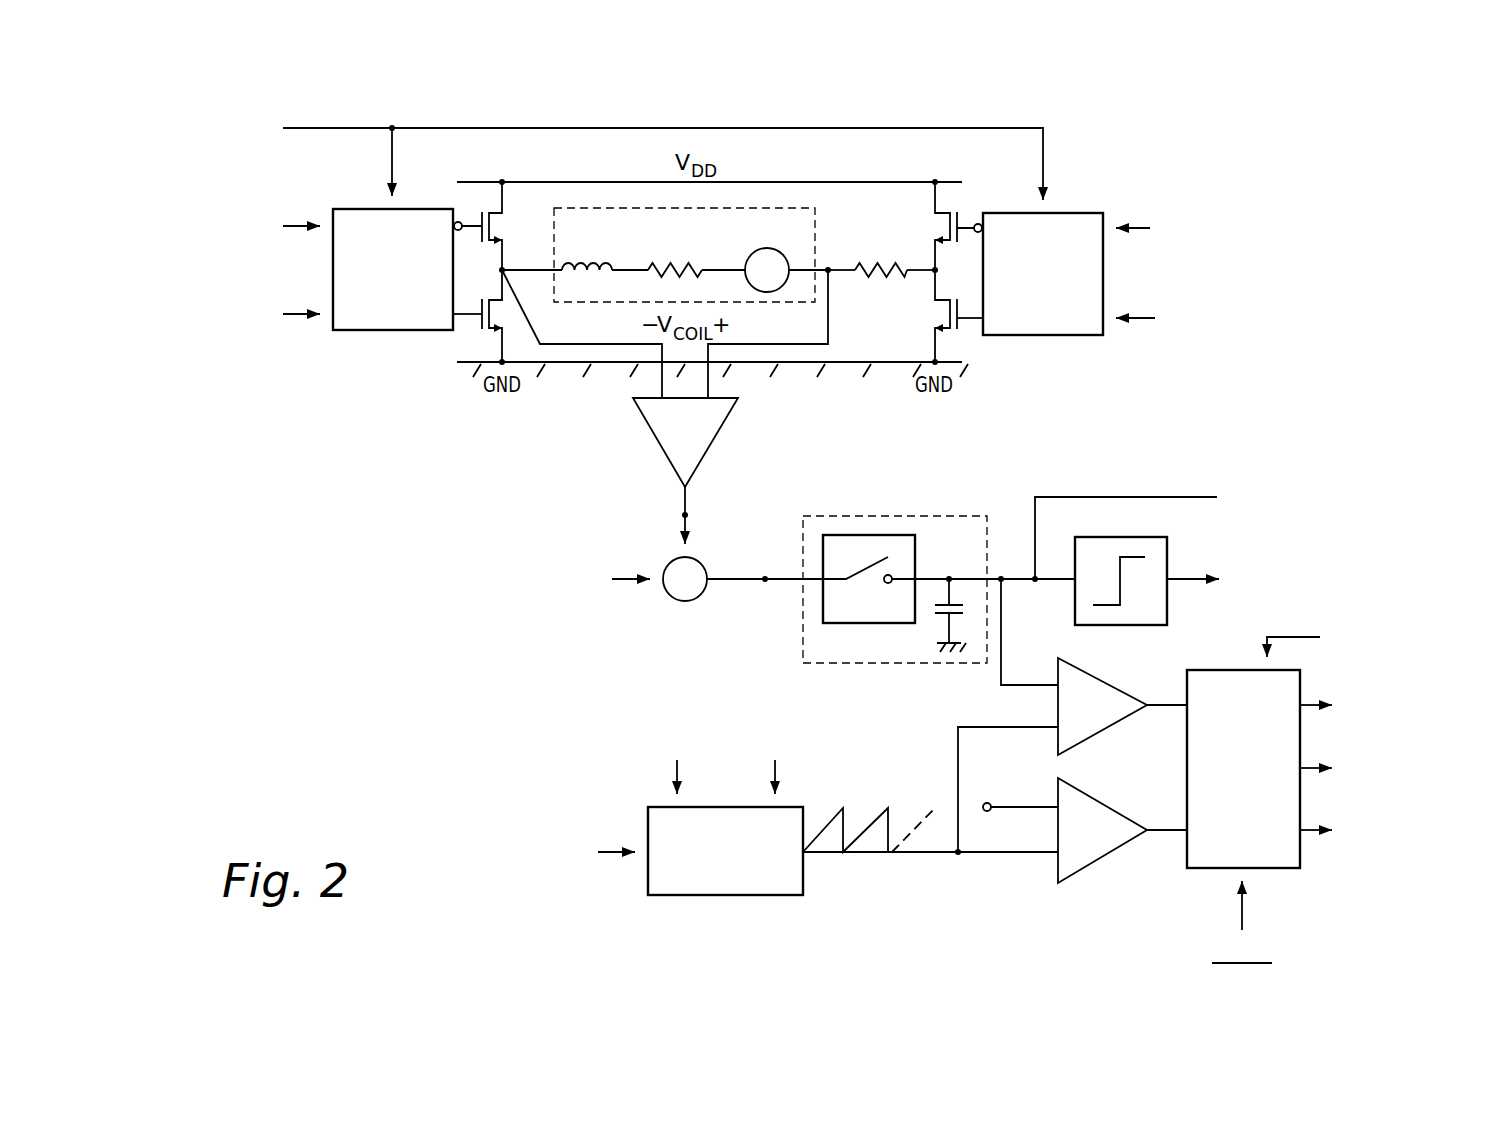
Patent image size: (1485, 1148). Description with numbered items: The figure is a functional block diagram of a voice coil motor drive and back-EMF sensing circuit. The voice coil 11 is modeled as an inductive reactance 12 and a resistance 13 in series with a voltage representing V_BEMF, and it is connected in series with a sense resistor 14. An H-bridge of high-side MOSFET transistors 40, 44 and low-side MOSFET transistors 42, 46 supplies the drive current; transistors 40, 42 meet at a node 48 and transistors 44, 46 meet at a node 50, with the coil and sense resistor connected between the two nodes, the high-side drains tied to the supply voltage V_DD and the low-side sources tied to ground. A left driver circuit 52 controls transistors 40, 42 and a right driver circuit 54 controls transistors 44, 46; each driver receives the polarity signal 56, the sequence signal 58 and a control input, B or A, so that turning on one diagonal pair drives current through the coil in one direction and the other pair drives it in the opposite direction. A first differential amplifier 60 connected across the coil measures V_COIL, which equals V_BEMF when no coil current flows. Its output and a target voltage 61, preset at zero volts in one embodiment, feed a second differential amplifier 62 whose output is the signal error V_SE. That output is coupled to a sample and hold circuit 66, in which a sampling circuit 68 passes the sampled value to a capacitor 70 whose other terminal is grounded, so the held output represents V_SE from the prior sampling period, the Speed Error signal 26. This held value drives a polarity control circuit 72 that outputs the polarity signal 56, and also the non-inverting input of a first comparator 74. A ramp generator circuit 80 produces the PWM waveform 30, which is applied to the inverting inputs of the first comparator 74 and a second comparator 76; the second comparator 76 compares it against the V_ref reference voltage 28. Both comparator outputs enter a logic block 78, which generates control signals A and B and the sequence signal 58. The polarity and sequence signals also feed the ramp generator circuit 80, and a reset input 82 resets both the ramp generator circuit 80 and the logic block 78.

The voice coil 11 is at (715, 254).
The inductive reactance 12 is at (576, 262).
The resistance 13 is at (667, 266).
The sense resistor 14 is at (876, 263).
The Speed Error signal 26 is at (1178, 497).
The V_ref reference voltage 28 is at (989, 813).
The PWM waveform 30 is at (865, 822).
The high-side MOSFET transistor 40 is at (487, 211).
The low-side MOSFET transistor 42 is at (487, 328).
The high-side MOSFET transistor 44 is at (957, 213).
The low-side MOSFET transistor 46 is at (957, 330).
The node 48 is at (510, 268).
The node 50 is at (935, 274).
The left driver circuit 52 is at (333, 254).
The right driver circuit 54 is at (1103, 258).
The polarity signal 56 is at (306, 126).
The sequence signal 58 is at (288, 316).
The first differential amplifier 60 is at (712, 440).
The target voltage 61 is at (625, 578).
The second differential amplifier 62 is at (700, 597).
The sample and hold circuit 66 is at (939, 567).
The sampling circuit 68 is at (915, 556).
The capacitor 70 is at (937, 612).
The polarity control circuit 72 is at (1167, 612).
The first comparator 74 is at (1105, 730).
The second comparator 76 is at (1105, 855).
The logic block 78 is at (1300, 857).
The ramp generator circuit 80 is at (803, 882).
The reset input 82 is at (1245, 900).